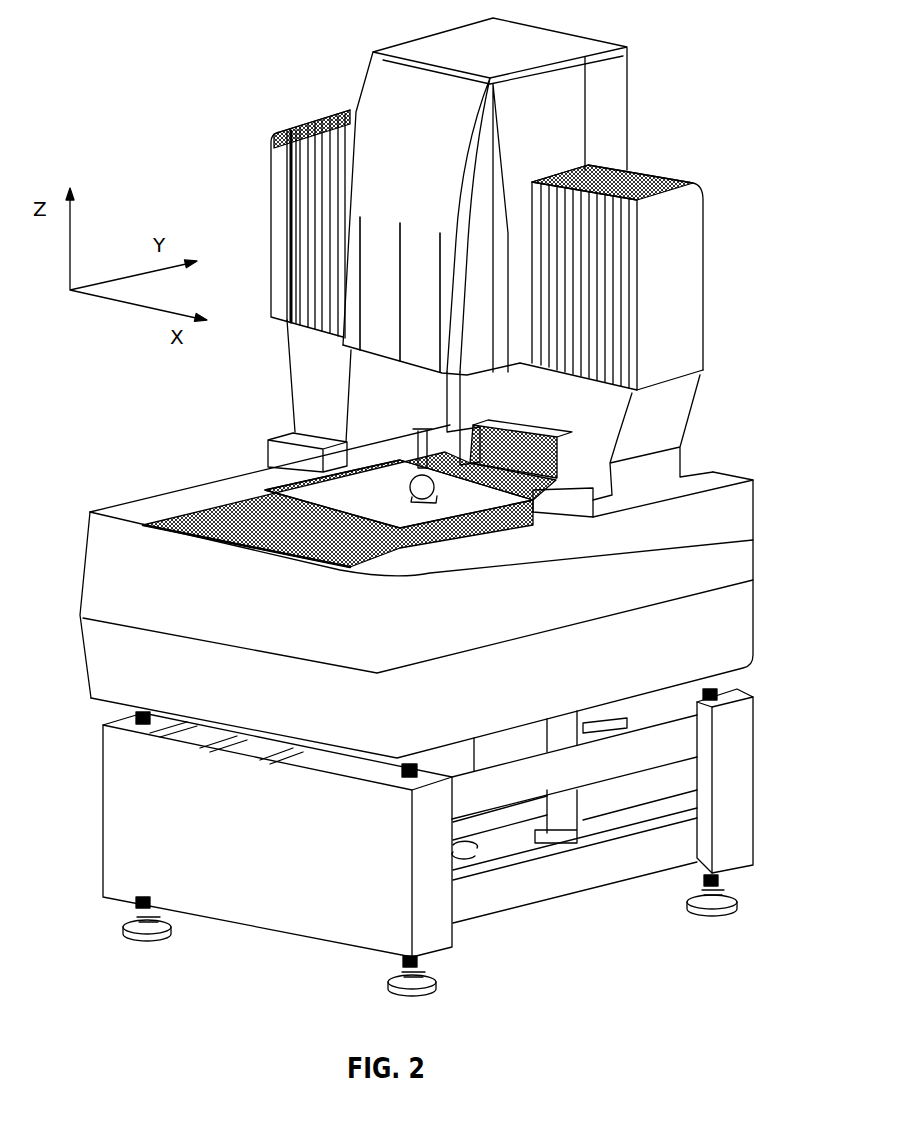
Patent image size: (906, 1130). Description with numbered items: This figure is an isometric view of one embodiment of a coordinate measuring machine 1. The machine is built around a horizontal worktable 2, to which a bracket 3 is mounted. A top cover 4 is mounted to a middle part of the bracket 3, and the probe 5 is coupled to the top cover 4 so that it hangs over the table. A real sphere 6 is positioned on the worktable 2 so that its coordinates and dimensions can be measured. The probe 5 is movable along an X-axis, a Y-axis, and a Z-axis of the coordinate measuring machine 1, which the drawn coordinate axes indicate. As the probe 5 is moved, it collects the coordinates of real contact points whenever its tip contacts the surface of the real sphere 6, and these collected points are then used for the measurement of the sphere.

The coordinate measuring machine 1 is at (277, 48).
The horizontal worktable 2 is at (303, 503).
The bracket 3 is at (670, 420).
The top cover 4 is at (613, 130).
The probe 5 is at (417, 447).
The real sphere 6 is at (437, 503).